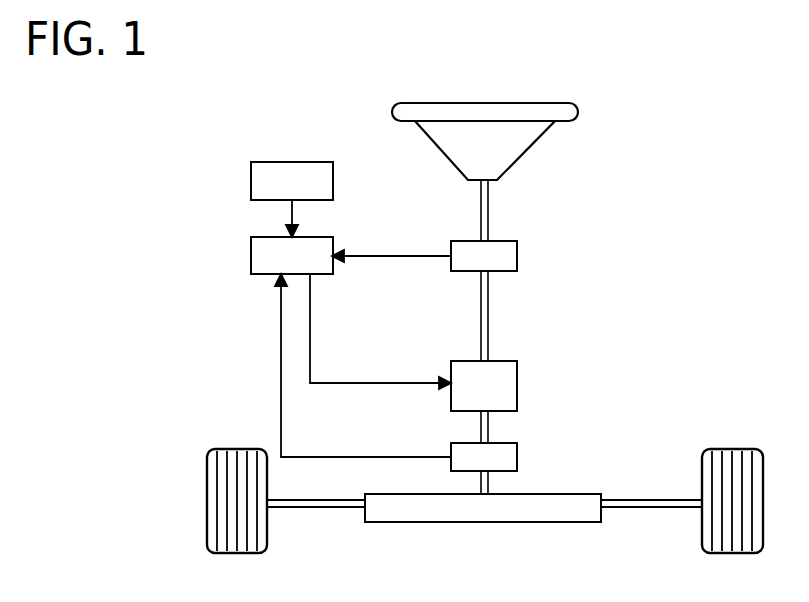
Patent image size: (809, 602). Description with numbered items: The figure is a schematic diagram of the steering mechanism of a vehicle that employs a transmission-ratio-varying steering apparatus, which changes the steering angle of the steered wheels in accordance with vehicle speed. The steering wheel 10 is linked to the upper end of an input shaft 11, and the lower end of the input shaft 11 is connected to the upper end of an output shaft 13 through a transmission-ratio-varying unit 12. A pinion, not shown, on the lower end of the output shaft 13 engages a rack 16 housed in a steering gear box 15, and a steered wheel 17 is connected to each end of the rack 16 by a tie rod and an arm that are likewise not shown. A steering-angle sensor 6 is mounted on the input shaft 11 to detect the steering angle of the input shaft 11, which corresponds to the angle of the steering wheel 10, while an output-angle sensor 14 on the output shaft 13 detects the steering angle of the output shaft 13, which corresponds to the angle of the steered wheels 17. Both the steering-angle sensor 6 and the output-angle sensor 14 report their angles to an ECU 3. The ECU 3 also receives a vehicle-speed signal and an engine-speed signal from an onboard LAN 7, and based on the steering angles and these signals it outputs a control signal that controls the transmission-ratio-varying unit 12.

The ECU 3 is at (261, 256).
The steering-angle sensor 6 is at (506, 253).
The onboard LAN 7 is at (267, 170).
The steering wheel 10 is at (540, 110).
The input shaft 11 is at (486, 316).
The transmission-ratio-varying unit 12 is at (510, 385).
The output shaft 13 is at (488, 428).
The output-angle sensor 14 is at (512, 460).
The steering gear box 15 is at (447, 510).
The rack 16 is at (310, 506).
The steered wheel 17 is at (237, 453).